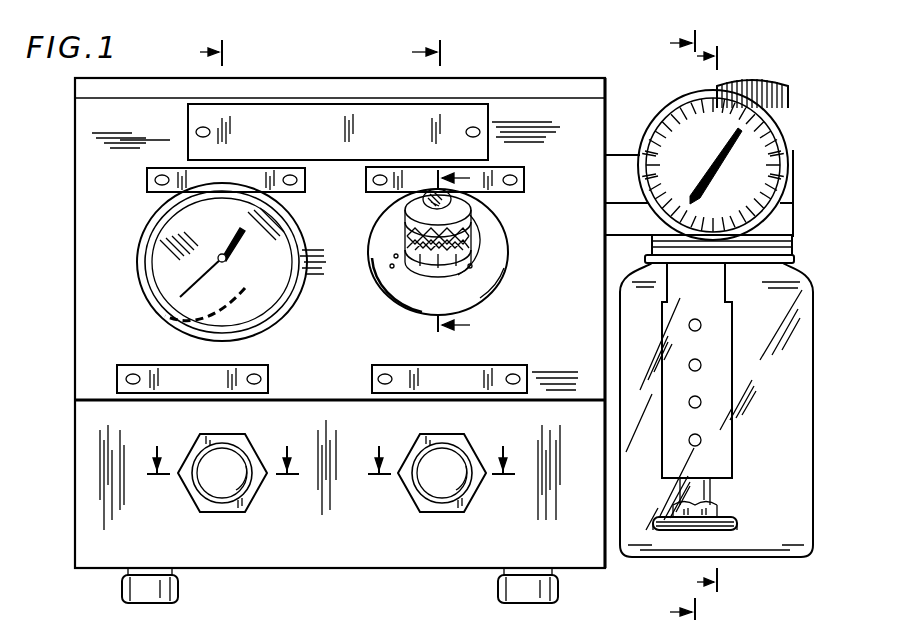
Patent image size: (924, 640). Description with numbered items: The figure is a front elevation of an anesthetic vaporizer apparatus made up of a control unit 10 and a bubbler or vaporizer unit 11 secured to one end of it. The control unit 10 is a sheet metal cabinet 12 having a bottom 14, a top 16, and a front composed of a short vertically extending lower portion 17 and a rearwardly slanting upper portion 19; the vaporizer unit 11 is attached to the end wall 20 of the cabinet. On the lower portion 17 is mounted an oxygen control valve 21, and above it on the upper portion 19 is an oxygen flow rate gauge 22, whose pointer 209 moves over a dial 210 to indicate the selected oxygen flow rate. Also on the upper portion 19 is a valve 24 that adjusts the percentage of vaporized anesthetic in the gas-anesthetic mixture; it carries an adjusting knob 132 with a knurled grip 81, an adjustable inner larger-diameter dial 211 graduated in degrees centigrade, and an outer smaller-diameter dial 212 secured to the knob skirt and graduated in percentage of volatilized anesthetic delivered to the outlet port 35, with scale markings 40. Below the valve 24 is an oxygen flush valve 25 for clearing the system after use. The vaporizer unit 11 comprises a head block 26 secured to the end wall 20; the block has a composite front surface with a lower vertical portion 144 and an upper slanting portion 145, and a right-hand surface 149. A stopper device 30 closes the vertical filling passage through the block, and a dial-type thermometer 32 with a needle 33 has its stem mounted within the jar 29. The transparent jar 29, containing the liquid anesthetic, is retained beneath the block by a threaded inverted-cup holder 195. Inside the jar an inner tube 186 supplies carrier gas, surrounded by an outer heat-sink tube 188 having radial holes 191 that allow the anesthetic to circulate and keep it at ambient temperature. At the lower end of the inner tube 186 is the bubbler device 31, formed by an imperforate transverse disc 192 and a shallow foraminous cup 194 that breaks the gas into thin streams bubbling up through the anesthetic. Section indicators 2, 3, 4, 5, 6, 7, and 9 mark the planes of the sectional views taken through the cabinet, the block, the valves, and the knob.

The control unit 10 is at (533, 76).
The bubbler or vaporizer unit 11 is at (733, 301).
The cabinet 12 is at (75, 558).
The bottom 14 is at (260, 568).
The top 16 is at (349, 77).
The lower portion of front panel 17 is at (75, 444).
The upper portion of front panel 19 is at (75, 216).
The end wall 20 is at (606, 118).
The oxygen control valve 21 is at (260, 446).
The oxygen flow rate gauge 22 is at (201, 265).
The valve 24 is at (444, 254).
The oxygen flush valve 25 is at (480, 444).
The head block 26 is at (796, 240).
The jar 29 is at (810, 375).
The stopper device 30 is at (786, 100).
The bubbler device 31 is at (742, 516).
The thermometer 32 is at (682, 110).
The needle 33 is at (726, 150).
The outlet port 35 is at (796, 166).
The dial scale 40 is at (437, 260).
The knurled grip 81 is at (476, 250).
The adjusting knob 132 is at (470, 220).
The lower vertical portion of front surface 144 is at (612, 270).
The upper rearwardly slanting portion of front surface 145 is at (617, 164).
The right-hand surface 149 is at (796, 214).
The inner tube 186 is at (710, 492).
The outer tube 188 is at (718, 322).
The radially directed holes 191 is at (694, 358).
The transverse disc 192 is at (660, 530).
The foraminous cup 194 is at (722, 536).
The holder 195 is at (796, 258).
The pointer 209 is at (224, 260).
The dial 210 is at (170, 261).
The inner dial 211 is at (392, 296).
The outer dial 212 is at (466, 290).
The section line 2 is at (219, 53).
The section line 3 is at (434, 53).
The section line 4 is at (671, 327).
The section line 5 is at (715, 319).
The section line 6 is at (222, 473).
The section line 7 is at (441, 473).
The section line 9 is at (440, 255).